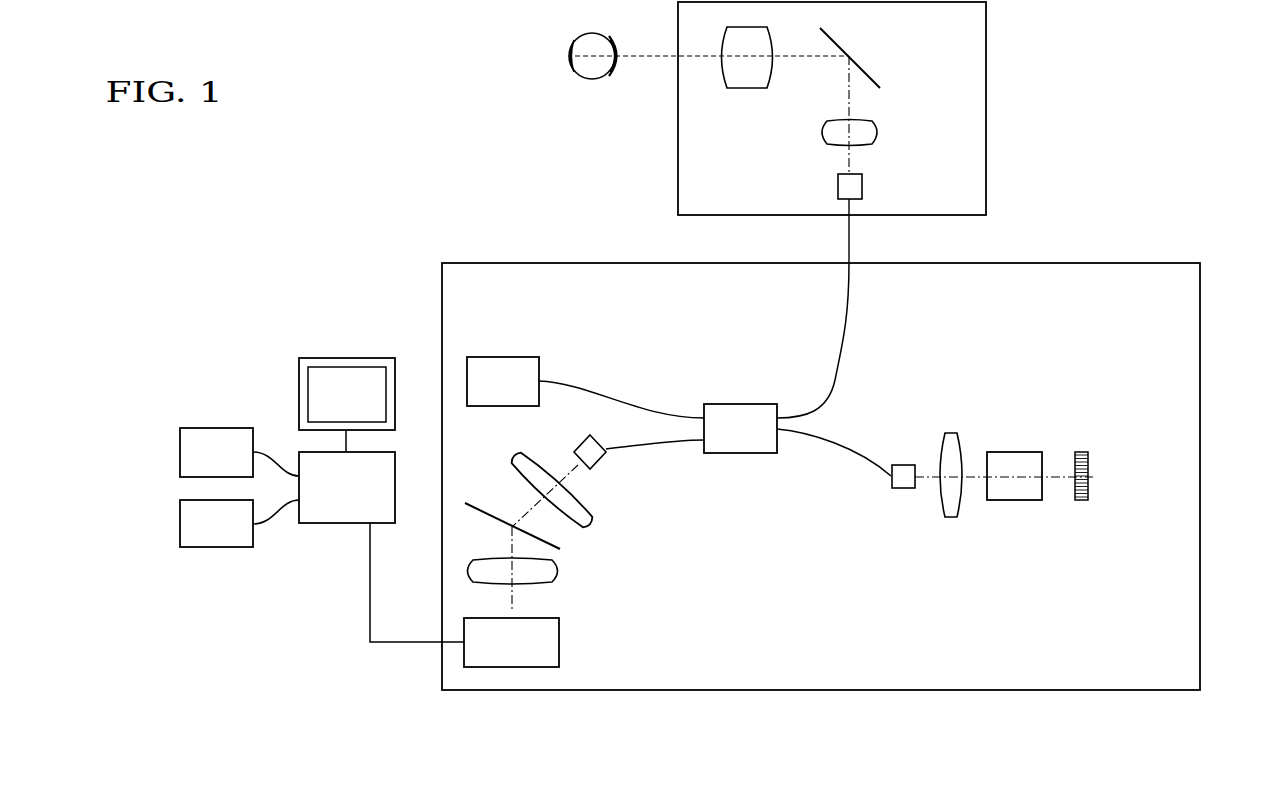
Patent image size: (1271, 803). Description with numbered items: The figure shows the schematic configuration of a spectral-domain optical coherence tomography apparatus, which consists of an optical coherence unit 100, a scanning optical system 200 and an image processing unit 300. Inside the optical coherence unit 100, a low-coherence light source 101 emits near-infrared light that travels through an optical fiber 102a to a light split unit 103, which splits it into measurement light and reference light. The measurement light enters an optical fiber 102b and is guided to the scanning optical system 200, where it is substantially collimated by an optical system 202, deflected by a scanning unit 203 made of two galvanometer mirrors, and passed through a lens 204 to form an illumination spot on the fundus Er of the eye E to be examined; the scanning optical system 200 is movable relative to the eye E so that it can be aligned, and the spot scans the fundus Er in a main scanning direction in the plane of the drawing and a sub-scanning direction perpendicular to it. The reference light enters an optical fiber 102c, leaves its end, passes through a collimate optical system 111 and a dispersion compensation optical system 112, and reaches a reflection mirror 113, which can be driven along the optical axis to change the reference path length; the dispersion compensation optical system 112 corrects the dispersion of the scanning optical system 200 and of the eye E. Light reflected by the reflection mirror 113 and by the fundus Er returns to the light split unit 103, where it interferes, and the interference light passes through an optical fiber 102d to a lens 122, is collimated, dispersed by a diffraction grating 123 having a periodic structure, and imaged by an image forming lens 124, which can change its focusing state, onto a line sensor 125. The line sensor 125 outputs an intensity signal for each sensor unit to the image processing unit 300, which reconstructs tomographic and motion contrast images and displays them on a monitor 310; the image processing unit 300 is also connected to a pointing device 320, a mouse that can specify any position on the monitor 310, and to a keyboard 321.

The optical coherence unit 100 is at (613, 262).
The low-coherence light source 101 is at (484, 398).
The optical fiber 102a is at (651, 405).
The optical fiber 102b is at (803, 416).
The optical fiber 102c is at (810, 438).
The optical fiber 102d is at (650, 448).
The light split unit 103 is at (721, 446).
The collimate optical system 111 is at (952, 432).
The dispersion compensation optical system 112 is at (1013, 502).
The reflection mirror 113 is at (1090, 470).
The lens 122 is at (585, 527).
The diffraction grating 123 is at (485, 508).
The image forming lens 124 is at (561, 570).
The line sensor 125 is at (493, 660).
The scanning optical system 200 is at (986, 100).
The optical system 202 is at (880, 132).
The scanning unit 203 is at (866, 68).
The lens 204 is at (747, 90).
The image processing unit 300 is at (327, 505).
The monitor 310 is at (327, 411).
The pointing device 320 is at (197, 469).
The keyboard 321 is at (197, 541).
The eye to be examined E is at (598, 80).
The fundus Er is at (573, 67).